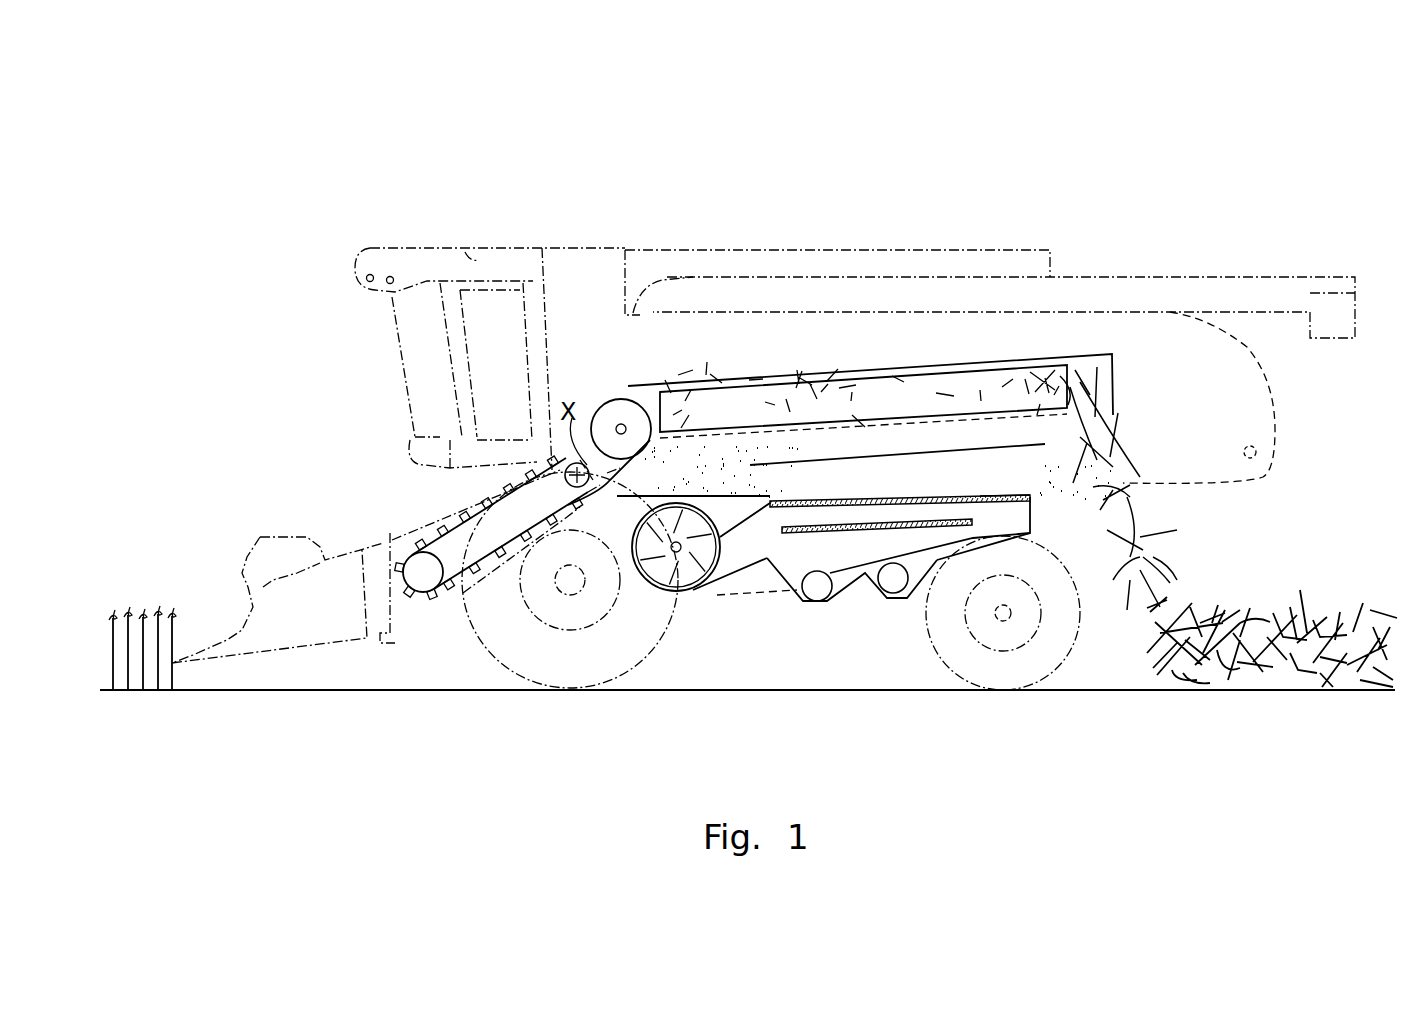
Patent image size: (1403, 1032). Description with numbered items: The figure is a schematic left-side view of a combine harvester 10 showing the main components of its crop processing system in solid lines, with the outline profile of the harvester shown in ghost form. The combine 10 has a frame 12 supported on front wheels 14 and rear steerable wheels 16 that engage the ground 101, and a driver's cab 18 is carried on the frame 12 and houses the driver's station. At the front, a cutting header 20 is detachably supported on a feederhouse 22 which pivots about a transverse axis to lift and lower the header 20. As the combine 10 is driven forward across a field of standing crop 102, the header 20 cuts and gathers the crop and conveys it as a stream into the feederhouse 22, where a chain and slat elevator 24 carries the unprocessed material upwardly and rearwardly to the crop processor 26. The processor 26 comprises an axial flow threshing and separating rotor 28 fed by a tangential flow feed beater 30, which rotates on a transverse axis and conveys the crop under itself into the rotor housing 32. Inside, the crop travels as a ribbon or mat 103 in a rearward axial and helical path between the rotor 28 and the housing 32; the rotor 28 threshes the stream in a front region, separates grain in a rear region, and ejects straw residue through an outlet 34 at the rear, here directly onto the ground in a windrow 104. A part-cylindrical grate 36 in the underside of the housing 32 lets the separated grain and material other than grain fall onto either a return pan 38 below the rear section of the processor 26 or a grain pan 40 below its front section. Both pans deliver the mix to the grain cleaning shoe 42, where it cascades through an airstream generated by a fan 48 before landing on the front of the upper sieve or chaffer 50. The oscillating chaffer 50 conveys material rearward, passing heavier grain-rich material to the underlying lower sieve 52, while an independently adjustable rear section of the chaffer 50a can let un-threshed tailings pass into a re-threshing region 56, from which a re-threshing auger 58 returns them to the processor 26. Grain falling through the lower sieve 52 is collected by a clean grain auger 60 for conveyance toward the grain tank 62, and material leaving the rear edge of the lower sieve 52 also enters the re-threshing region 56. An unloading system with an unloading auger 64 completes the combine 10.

The combine harvester 10 is at (385, 190).
The frame 12 is at (770, 594).
The front wheels 14 is at (498, 652).
The rear steerable wheels 16 is at (1060, 663).
The driver's cab 18 is at (470, 250).
The cutting header 20 is at (270, 510).
The feederhouse 22 is at (430, 512).
The elevator 24 is at (450, 592).
The crop processor 26 is at (680, 380).
The axial flow threshing and separating rotor 28 is at (848, 386).
The feed beater 30 is at (612, 398).
The rotor housing 32 is at (768, 386).
The outlet 34 is at (1122, 430).
The part-cylindrical grate 36 is at (878, 473).
The return pan 38 is at (988, 447).
The grain pan 40 is at (645, 497).
The grain cleaning shoe 42 is at (858, 580).
The fan 48 is at (690, 580).
The upper sieve or chaffer 50 is at (887, 500).
The rear section of chaffer 50a is at (990, 497).
The lower sieve 52 is at (860, 528).
The re-threshing region 56 is at (937, 560).
The re-threshing auger 58 is at (893, 593).
The clean grain auger 60 is at (820, 602).
The grain tank 62 is at (748, 250).
The unloading auger 64 is at (1192, 276).
The ground 101 is at (263, 692).
The standing crop 102 is at (150, 612).
The ribbon or mat 103 is at (932, 385).
The windrow 104 is at (1300, 615).